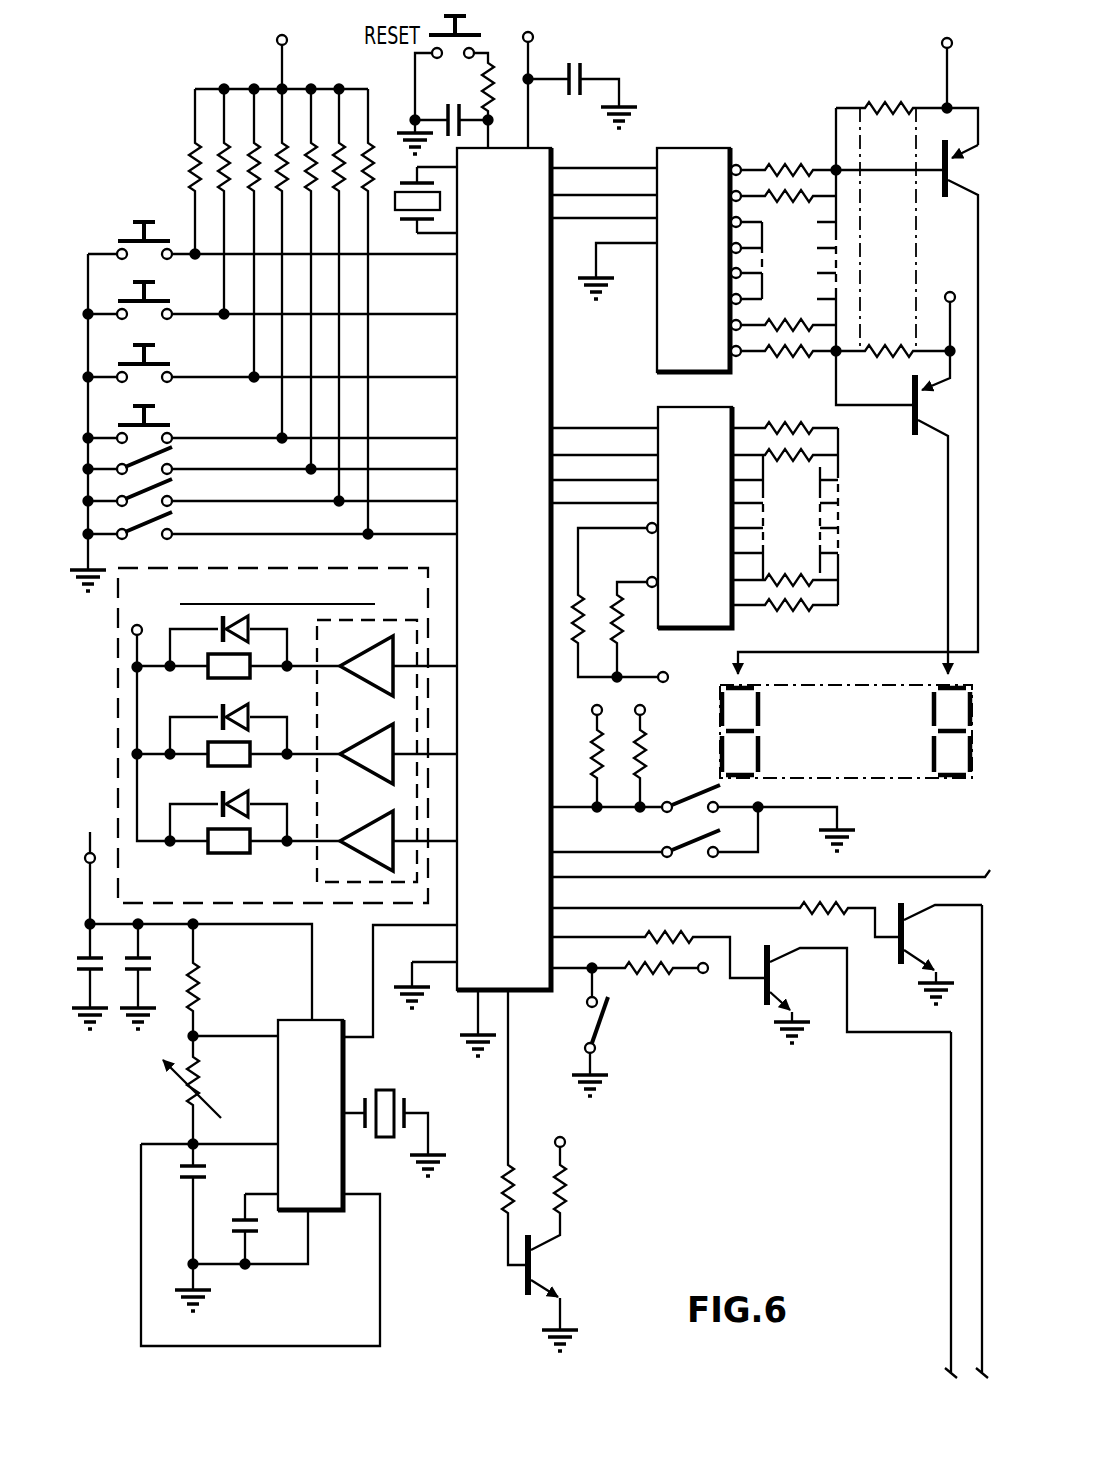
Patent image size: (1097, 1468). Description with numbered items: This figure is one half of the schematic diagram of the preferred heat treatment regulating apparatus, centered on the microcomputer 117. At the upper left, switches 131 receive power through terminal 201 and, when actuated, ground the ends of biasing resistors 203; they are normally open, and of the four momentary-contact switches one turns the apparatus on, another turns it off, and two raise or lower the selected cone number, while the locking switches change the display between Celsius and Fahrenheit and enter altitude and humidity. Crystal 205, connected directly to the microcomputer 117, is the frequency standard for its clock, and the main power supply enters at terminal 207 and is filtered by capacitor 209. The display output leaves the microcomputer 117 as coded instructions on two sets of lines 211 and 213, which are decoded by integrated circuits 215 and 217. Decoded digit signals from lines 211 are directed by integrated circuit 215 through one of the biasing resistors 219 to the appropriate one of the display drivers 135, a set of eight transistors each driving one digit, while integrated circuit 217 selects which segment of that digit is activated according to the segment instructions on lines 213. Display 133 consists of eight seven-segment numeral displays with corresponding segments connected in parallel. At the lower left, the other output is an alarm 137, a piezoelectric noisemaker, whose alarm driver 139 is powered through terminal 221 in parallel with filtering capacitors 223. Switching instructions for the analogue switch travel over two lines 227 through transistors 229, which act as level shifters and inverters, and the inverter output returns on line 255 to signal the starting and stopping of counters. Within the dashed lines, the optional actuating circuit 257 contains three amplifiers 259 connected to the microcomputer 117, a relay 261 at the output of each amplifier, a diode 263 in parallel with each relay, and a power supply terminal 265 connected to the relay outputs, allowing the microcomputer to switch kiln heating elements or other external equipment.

The microcomputer 117 is at (522, 420).
The switches 131 is at (132, 238).
The display 133 is at (854, 745).
The display drivers 135 is at (904, 265).
The alarm 137 is at (386, 1098).
The alarm driver 139 is at (328, 1063).
The terminal 201 is at (276, 40).
The biasing resistors 203 is at (192, 170).
The crystal 205 is at (430, 203).
The terminal 207 is at (534, 36).
The capacitor 209 is at (584, 66).
The lines 211 is at (598, 220).
The lines 213 is at (568, 505).
The integrated circuit 215 is at (655, 346).
The integrated circuit 217 is at (705, 412).
The biasing resistors 219 is at (791, 158).
The terminal 221 is at (86, 862).
The filtering capacitors 223 is at (136, 975).
The lines 227 is at (982, 1165).
The transistors 229 is at (900, 955).
The line 255 is at (898, 878).
The actuating circuit 257 is at (262, 735).
The amplifiers 259 is at (368, 748).
The relay 261 is at (210, 679).
The diode 263 is at (250, 634).
The power supply terminal 265 is at (131, 630).